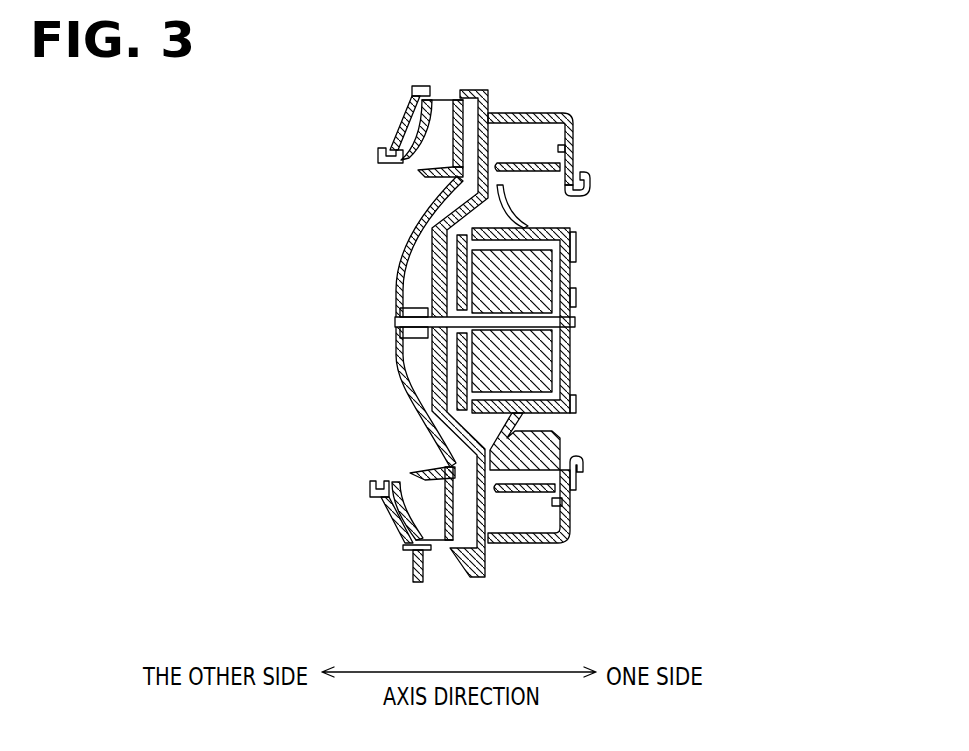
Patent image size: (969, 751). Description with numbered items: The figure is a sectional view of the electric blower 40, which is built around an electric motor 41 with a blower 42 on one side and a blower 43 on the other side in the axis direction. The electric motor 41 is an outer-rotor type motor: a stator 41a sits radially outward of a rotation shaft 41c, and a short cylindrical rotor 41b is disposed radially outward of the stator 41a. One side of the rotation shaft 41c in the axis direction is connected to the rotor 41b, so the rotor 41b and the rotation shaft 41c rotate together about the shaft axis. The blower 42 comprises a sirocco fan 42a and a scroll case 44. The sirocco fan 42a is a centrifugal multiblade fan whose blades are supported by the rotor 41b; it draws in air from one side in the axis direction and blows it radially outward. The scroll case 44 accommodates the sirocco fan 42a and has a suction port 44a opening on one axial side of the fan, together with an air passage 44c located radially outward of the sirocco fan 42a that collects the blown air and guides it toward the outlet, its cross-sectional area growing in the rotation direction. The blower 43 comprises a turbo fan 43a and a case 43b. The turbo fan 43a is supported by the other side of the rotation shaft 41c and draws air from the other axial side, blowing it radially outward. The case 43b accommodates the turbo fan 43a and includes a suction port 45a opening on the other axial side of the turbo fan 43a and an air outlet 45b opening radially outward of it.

The electric blower 40 is at (278, 548).
The electric motor 41 is at (690, 280).
The stator 41a is at (538, 283).
The rotor 41b is at (548, 345).
The rotation shaft 41c is at (580, 322).
The blower 42 is at (688, 186).
The sirocco fan 42a is at (575, 235).
The blower 43 is at (232, 166).
The turbo fan 43a is at (428, 176).
The case 43b is at (378, 150).
The scroll case 44 is at (590, 180).
The suction port 44a is at (568, 413).
The air passage 44c is at (538, 150).
The suction port 45a is at (394, 426).
The air outlet 45b is at (445, 83).